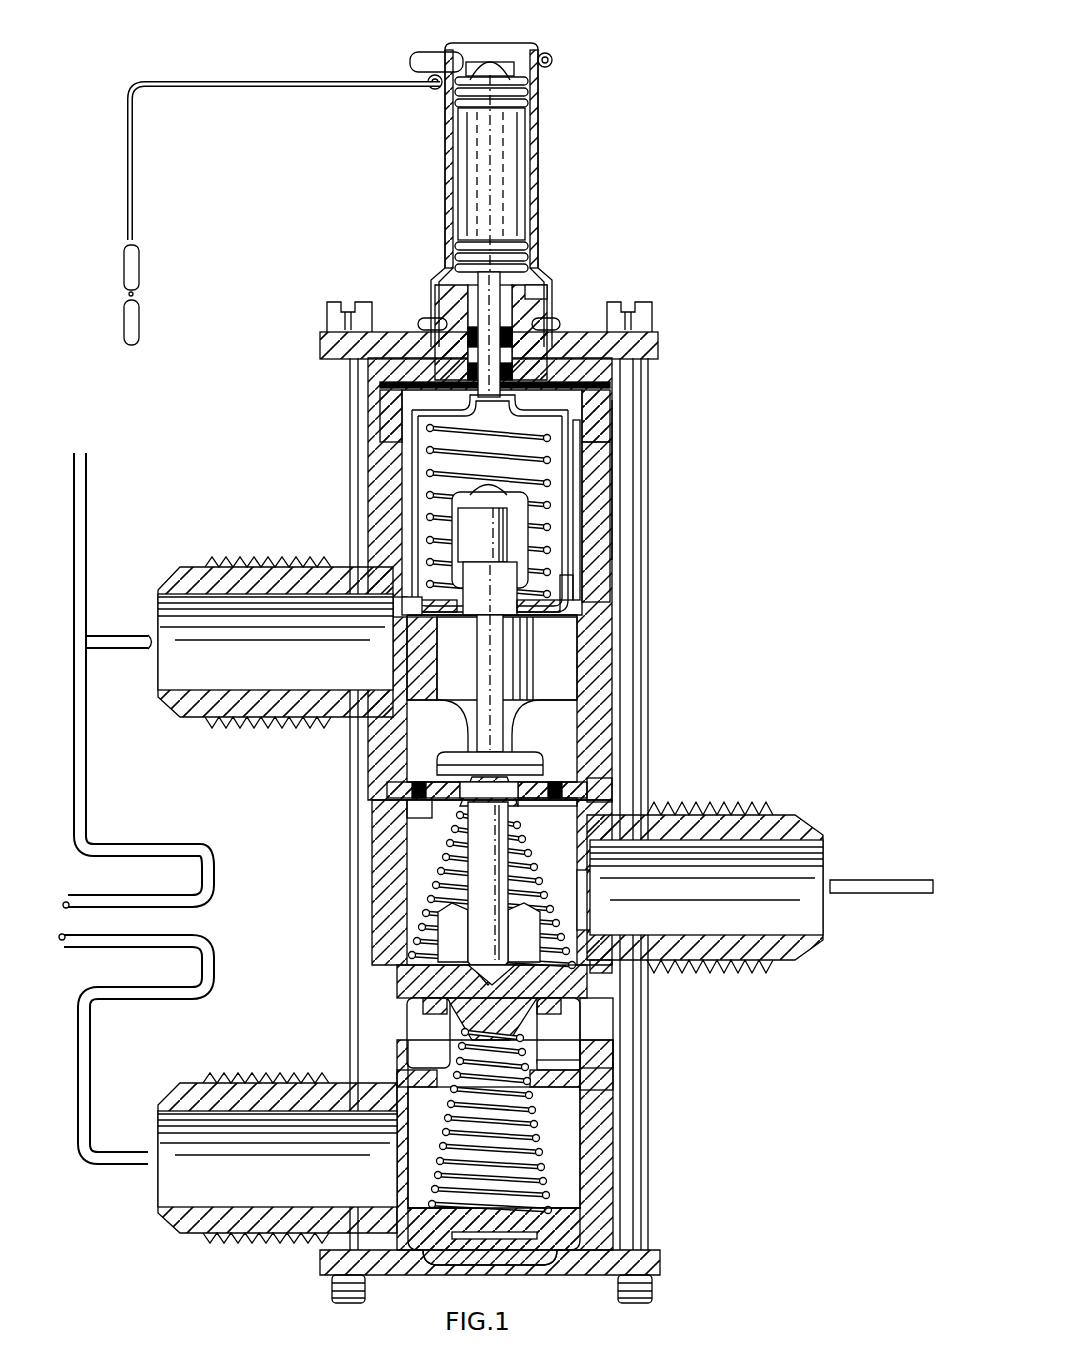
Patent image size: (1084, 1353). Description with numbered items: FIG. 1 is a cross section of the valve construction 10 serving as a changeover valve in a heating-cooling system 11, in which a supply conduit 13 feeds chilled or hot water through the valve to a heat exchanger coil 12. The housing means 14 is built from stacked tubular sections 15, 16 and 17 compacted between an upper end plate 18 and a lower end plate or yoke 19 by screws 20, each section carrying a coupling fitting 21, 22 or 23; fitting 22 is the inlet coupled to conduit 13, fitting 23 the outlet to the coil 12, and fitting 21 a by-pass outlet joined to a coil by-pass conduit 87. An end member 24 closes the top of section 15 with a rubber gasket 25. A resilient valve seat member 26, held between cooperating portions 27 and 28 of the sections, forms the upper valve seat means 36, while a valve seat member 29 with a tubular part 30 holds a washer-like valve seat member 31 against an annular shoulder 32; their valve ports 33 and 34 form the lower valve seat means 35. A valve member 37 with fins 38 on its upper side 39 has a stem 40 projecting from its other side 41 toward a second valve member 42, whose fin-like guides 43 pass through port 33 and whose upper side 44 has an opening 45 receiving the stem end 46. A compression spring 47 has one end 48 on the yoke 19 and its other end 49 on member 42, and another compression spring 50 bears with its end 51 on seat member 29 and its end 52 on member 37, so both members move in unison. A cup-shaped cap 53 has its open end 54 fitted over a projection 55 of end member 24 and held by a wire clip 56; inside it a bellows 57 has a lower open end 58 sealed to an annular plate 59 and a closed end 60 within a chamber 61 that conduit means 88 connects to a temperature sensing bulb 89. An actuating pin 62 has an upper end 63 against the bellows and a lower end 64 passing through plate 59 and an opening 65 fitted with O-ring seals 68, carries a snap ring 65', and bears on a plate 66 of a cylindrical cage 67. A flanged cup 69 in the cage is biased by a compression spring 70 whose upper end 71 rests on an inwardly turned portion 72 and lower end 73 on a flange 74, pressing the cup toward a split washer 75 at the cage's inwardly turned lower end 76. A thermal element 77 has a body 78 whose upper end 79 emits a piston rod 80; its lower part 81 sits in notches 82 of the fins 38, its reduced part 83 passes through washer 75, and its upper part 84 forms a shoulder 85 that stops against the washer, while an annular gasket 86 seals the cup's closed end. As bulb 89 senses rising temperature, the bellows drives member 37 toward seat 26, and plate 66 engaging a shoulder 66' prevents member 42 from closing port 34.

The valve construction 10 is at (712, 410).
The heating-cooling system 11 is at (168, 528).
The heat exchanger coil 12 is at (204, 845).
The supply conduit 13 is at (870, 878).
The housing means 14 is at (665, 593).
The tubular section 15 is at (600, 547).
The tubular section 16 is at (400, 855).
The tubular section 17 is at (615, 1125).
The upper end plate 18 is at (655, 350).
The lower end plate or yoke 19 is at (615, 1272).
The screws or fastening members 20 is at (643, 652).
The coupling fitting 21 is at (240, 575).
The coupling fitting 22 is at (775, 815).
The coupling fitting 23 is at (300, 1244).
The end member 24 is at (562, 328).
The rubber gasket 25 is at (600, 386).
The resilient valve seat member 26 is at (560, 782).
The cooperating portion 27 is at (605, 780).
The cooperating portion 28 is at (600, 802).
The valve seat member 29 is at (580, 1015).
The tubular part 30 is at (600, 1075).
The washer-like valve seat member 31 is at (600, 1090).
The annular shoulder 32 is at (500, 1112).
The valve seat or valve port 33 is at (470, 1005).
The valve seat or valve port 34 is at (550, 1080).
The lower valve seat means 35 is at (432, 1047).
The upper valve seat means 36 is at (420, 806).
The valve member 37 is at (530, 772).
The fins or guides 38 is at (560, 690).
The upper side 39 is at (530, 750).
The stem 40 is at (466, 850).
The other side 41 is at (440, 775).
The valve member 42 is at (435, 1090).
The fin-like guides 43 is at (478, 905).
The upper side 44 is at (460, 1000).
The opening 45 is at (600, 990).
The end 46 is at (490, 968).
The compression spring 47 is at (560, 1172).
The one end 48 is at (575, 1212).
The other end 49 is at (598, 1050).
The compression spring 50 is at (450, 915).
The one end 51 is at (585, 935).
The other end 52 is at (518, 800).
The cap or cup-shaped member 53 is at (536, 192).
The open end 54 is at (552, 300).
The upwardly directed projection 55 is at (520, 300).
The wire clip 56 is at (558, 330).
The bellows 57 is at (520, 90).
The lower open end 58 is at (448, 262).
The annular plate 59 is at (452, 280).
The upper closed end 60 is at (505, 72).
The chamber 61 is at (484, 55).
The actuating pin 62 is at (503, 160).
The upper end 63 is at (440, 100).
The lower end 64 is at (478, 392).
The opening 65 is at (448, 320).
The snap ring 65' is at (657, 315).
The flange or plate 66 is at (423, 493).
The shoulder 66' is at (641, 419).
The cylindrical cage 67 is at (415, 458).
The dynamic O-ring seals 68 is at (435, 327).
The flanged cup 69 is at (590, 530).
The compression spring 70 is at (620, 447).
The upper end 71 is at (415, 435).
The inwardly turned portion 72 is at (576, 422).
The lower end 73 is at (568, 585).
The outwardly turned flange 74 is at (560, 606).
The split washer 75 is at (568, 620).
The inwardly turned lower end 76 is at (460, 608).
The thermal element 77 is at (472, 612).
The body or housing 78 is at (425, 606).
The upper end 79 is at (545, 480).
The piston rod 80 is at (528, 500).
The large cylindrical lower part 81 is at (455, 685).
The notches 82 is at (545, 720).
The intermediate reduced cylindrical part 83 is at (490, 620).
The larger cylindrical upper part 84 is at (480, 530).
The shoulder 85 is at (463, 575).
The annular gasket 86 is at (470, 508).
The coil by-pass conduit 87 is at (100, 635).
The conduit means 88 is at (322, 78).
The temperature sensing bulb 89 is at (140, 274).